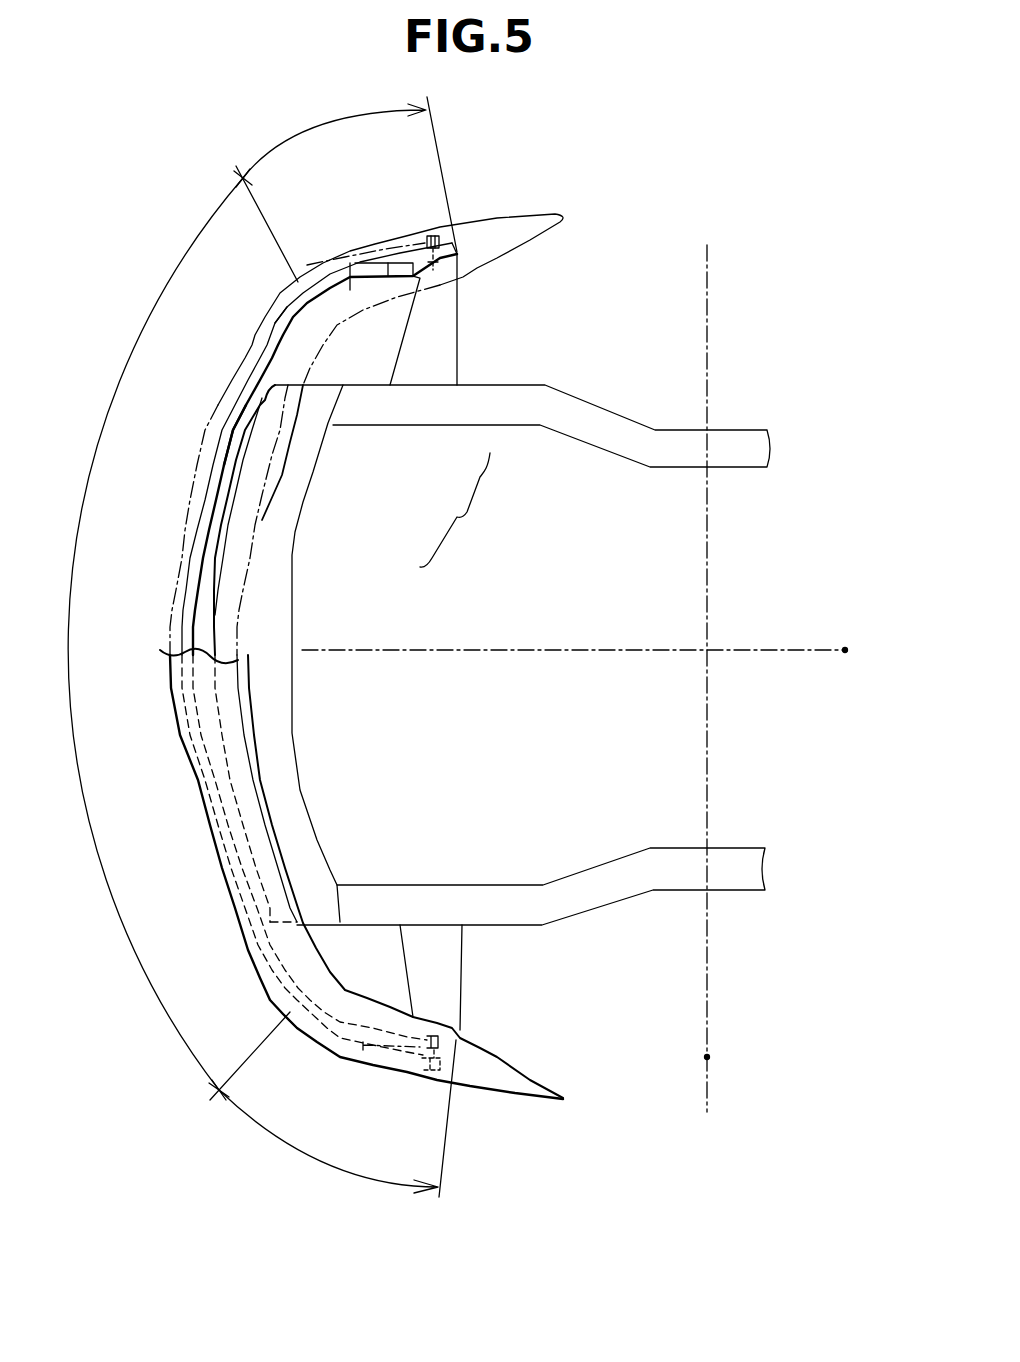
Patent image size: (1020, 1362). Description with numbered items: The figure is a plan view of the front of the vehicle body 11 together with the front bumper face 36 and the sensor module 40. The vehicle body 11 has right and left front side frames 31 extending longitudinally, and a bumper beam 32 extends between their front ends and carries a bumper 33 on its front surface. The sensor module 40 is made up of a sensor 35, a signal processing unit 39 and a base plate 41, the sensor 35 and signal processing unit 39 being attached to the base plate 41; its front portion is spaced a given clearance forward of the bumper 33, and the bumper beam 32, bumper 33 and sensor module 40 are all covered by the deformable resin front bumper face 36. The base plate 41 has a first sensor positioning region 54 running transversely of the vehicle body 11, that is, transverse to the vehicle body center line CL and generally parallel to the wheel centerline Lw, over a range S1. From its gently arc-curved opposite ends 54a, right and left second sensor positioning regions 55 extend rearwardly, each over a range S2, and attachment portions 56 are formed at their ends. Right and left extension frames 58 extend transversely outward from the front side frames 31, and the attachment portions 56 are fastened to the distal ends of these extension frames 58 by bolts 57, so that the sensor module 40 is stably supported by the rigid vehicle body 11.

The vehicle body 11 is at (746, 410).
The front side frame 31 is at (578, 403).
The bumper beam 32 is at (280, 683).
The bumper 33 is at (241, 521).
The sensor 35 is at (352, 280).
The front bumper face 36 is at (197, 799).
The signal processing unit 39 is at (390, 268).
The sensor module 40 is at (462, 510).
The base plate 41 is at (257, 473).
The first sensor positioning region 54 is at (185, 591).
The opposite end of the first sensor positioning region 54a is at (307, 278).
The second sensor positioning region 55 is at (377, 256).
The attachment portion 56 is at (430, 232).
The bolt 57 is at (432, 1072).
The extension frame 58 is at (448, 325).
The range of the first sensor positioning region S1 is at (145, 634).
The range of the second sensor positioning region S2 is at (333, 647).
The vehicle body center line CL is at (843, 650).
The centerline of the vehicle wheel Lw is at (707, 1057).